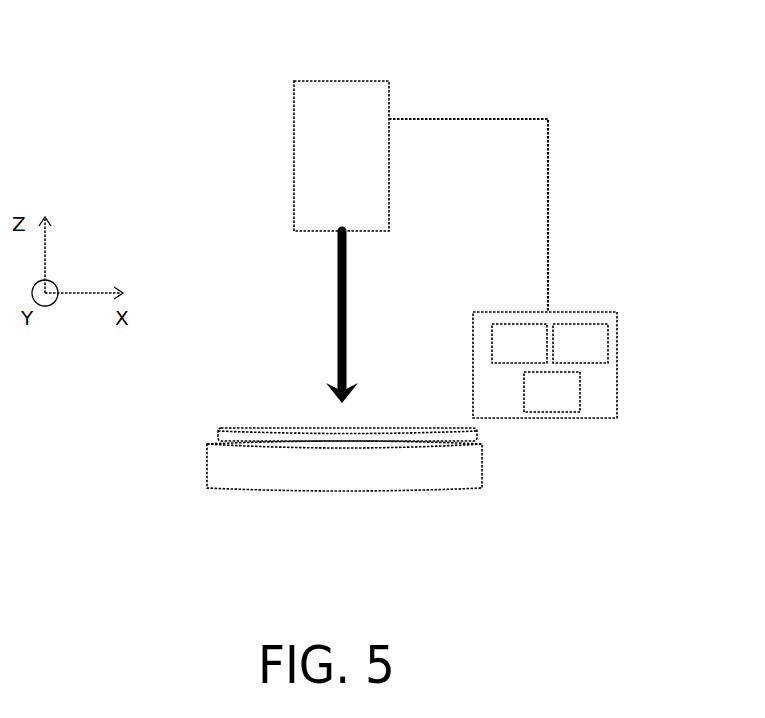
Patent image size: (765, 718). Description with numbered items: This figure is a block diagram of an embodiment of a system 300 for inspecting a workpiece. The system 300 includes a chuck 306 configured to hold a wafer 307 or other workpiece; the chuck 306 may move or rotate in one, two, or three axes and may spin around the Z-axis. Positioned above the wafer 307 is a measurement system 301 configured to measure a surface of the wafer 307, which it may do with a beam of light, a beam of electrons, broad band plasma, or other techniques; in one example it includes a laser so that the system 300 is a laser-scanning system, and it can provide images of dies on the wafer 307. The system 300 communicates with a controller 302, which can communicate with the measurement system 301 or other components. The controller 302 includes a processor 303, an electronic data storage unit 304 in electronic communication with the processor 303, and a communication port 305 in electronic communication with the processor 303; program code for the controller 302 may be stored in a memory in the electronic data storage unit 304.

The system 300 is at (182, 96).
The measurement system 301 is at (341, 156).
The controller 302 is at (577, 317).
The processor 303 is at (519, 343).
The electronic data storage unit 304 is at (580, 343).
The communication port 305 is at (552, 392).
The chuck 306 is at (250, 490).
The wafer 307 is at (275, 427).